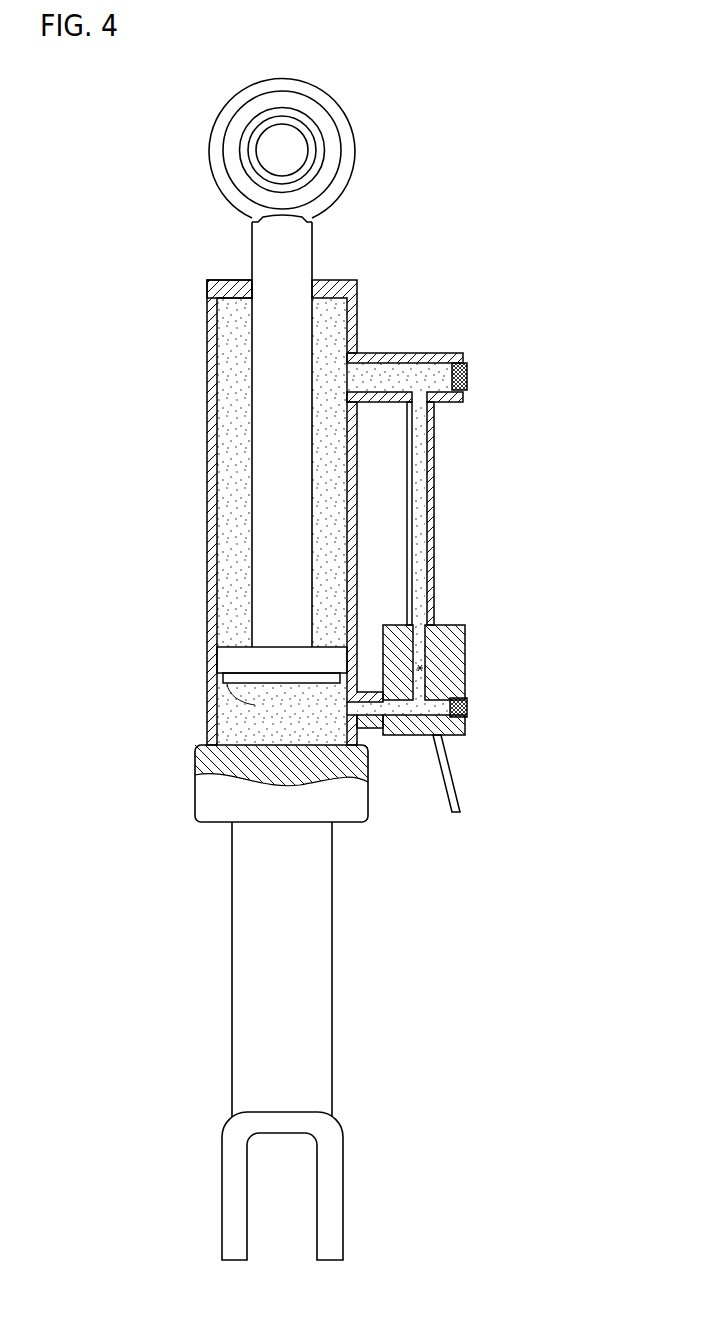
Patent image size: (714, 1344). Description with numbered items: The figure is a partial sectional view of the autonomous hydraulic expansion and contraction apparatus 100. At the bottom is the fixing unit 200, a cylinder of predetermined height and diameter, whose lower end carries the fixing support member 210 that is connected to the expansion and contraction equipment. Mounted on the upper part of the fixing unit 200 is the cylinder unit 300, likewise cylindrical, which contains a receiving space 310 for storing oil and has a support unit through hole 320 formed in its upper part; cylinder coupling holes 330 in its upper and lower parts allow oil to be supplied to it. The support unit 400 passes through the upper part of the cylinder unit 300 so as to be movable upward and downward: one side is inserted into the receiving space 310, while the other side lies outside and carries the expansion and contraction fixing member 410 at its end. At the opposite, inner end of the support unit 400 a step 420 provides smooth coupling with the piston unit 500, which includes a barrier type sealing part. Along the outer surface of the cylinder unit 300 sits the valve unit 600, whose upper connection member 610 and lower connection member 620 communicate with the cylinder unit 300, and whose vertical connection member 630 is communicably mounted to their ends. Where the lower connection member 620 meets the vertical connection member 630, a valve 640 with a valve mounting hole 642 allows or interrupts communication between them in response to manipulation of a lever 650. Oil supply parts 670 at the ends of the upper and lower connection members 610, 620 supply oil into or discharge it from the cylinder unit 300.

The autonomous hydraulic expansion and contraction apparatus 100 is at (540, 237).
The fixing unit 200 is at (318, 987).
The fixing support member 210 is at (333, 1188).
The cylinder unit 300 is at (220, 525).
The receiving space 310 is at (222, 372).
The support unit through hole 320 is at (262, 278).
The cylinder coupling holes 330 is at (334, 376).
The support unit 400 is at (250, 430).
The expansion and contraction fixing member 410 is at (223, 145).
The step 420 is at (255, 693).
The piston unit 500 is at (228, 660).
The valve unit 600 is at (465, 571).
The upper connection member 610 is at (403, 352).
The lower connection member 620 is at (376, 736).
The vertical connection member 630 is at (432, 565).
The valve 640 is at (438, 656).
The valve mounting hole 642 is at (438, 678).
The lever 650 is at (458, 787).
The oil supply parts 670 is at (468, 372).